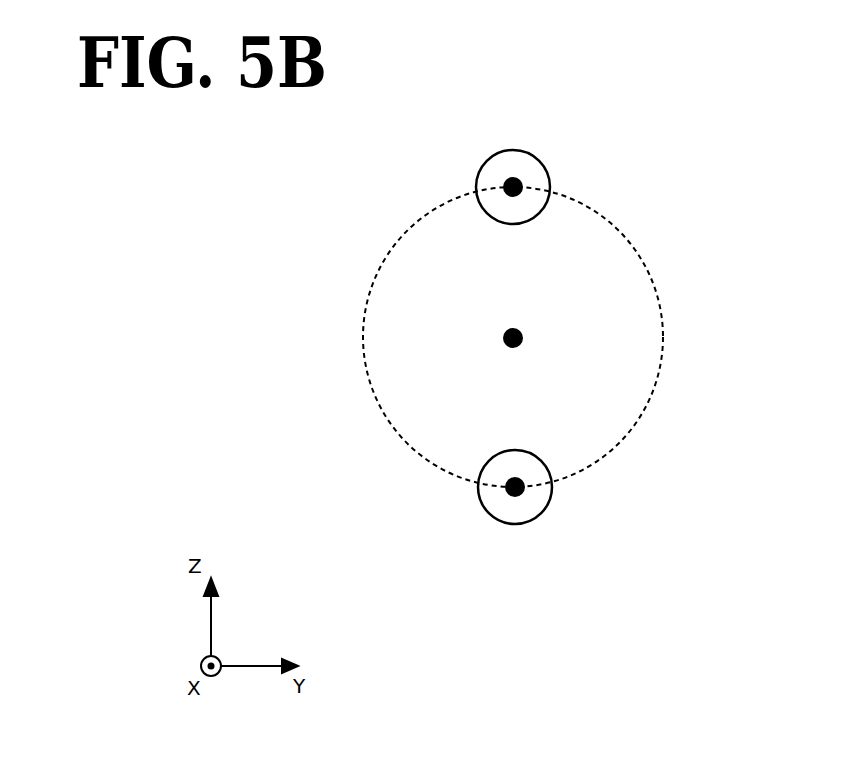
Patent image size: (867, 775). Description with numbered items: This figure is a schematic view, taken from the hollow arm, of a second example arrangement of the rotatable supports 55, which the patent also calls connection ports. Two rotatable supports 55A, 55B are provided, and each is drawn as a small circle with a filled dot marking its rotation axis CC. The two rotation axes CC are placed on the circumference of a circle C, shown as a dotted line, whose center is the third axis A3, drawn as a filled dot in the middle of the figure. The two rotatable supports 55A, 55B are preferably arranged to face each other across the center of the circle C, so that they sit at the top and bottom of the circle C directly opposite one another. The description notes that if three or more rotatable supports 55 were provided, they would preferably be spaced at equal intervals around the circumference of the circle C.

The rotatable support 55A is at (542, 158).
The rotatable support 55B is at (537, 520).
The rotatable support 55 is at (585, 335).
The rotation axis CC is at (508, 182).
The circle C is at (653, 273).
The third axis A3 is at (517, 347).